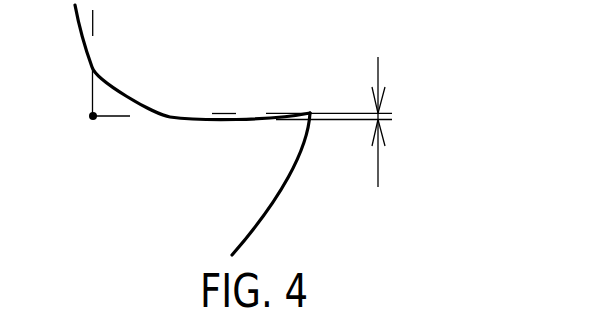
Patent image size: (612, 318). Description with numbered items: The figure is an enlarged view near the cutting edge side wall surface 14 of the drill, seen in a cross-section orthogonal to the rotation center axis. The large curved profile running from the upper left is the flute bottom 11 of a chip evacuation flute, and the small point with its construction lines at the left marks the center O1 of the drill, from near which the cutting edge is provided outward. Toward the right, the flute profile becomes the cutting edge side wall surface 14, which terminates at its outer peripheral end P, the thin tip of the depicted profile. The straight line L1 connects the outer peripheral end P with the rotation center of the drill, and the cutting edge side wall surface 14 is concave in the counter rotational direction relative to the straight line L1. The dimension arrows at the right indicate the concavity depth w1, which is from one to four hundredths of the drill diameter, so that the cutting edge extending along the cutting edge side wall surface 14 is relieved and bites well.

The flute bottom 11 is at (108, 80).
The cutting edge side wall surface 14 is at (225, 124).
The outer peripheral end of the cutting edge side wall surface P is at (310, 112).
The center of the drill O1 is at (98, 81).
The straight line L1 is at (329, 107).
The concavity depth w1 is at (399, 122).